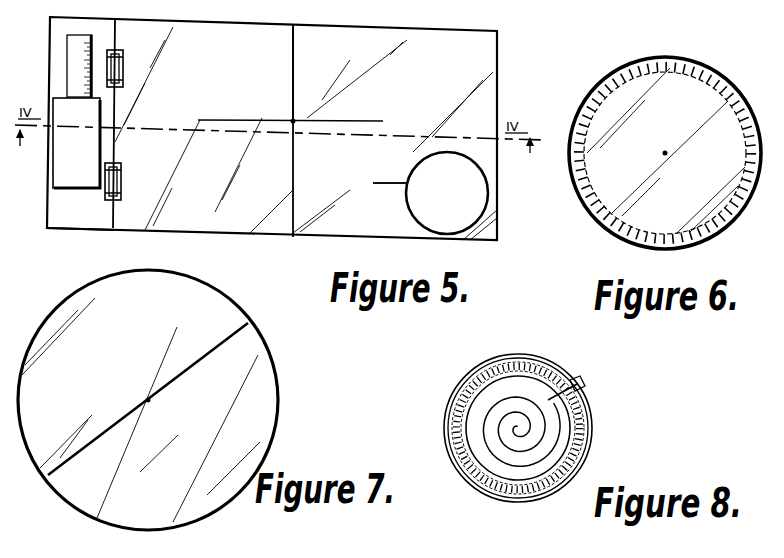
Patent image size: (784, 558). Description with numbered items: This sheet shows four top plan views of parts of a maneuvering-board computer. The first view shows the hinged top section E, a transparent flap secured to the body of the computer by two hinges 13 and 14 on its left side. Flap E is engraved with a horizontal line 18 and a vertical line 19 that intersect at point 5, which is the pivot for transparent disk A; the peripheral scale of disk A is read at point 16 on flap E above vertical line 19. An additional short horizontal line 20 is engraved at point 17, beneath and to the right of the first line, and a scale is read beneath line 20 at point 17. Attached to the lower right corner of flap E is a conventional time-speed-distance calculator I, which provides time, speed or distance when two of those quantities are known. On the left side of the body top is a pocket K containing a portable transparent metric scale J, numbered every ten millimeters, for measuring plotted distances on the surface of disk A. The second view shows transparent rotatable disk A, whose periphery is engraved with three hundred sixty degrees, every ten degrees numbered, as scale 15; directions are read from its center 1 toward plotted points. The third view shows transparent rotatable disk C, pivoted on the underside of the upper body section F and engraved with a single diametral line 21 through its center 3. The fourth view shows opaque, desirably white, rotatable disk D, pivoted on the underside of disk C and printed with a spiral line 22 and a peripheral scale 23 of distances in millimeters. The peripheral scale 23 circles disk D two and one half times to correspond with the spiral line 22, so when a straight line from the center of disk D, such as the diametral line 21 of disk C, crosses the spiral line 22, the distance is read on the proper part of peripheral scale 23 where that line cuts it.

In FIG. 6, the center of disk A 1 is at (664, 154).
In FIG. 7, the center point 3 is at (152, 399).
In FIG. 5, the point of intersection 5 is at (291, 121).
In FIG. 5, the hinge 13 is at (124, 65).
In FIG. 5, the hinge 14 is at (122, 176).
In FIG. 6, the scale 15 is at (718, 70).
In FIG. 5, the point 16 is at (295, 199).
In FIG. 5, the point 17 is at (397, 179).
In FIG. 5, the horizontal line 18 is at (338, 121).
In FIG. 5, the vertical line 19 is at (294, 69).
In FIG. 5, the short horizontal line 20 is at (373, 185).
In FIG. 7, the diametral line 21 is at (236, 331).
In FIG. 8, the spiral line 22 is at (487, 442).
In FIG. 8, the peripheral scale 23 is at (583, 381).
In FIG. 6, the transparent rotatable disk A is at (658, 56).
In FIG. 7, the transparent rotatable disk C is at (78, 286).
In FIG. 8, the opaque rotatable disk D is at (516, 354).
In FIG. 5, the hinged top section E is at (490, 50).
In FIG. 5, the upper section of the body F is at (80, 222).
In FIG. 5, the time-speed-distance calculator I is at (483, 163).
In FIG. 5, the portable scale J is at (66, 47).
In FIG. 5, the pocket K is at (70, 140).